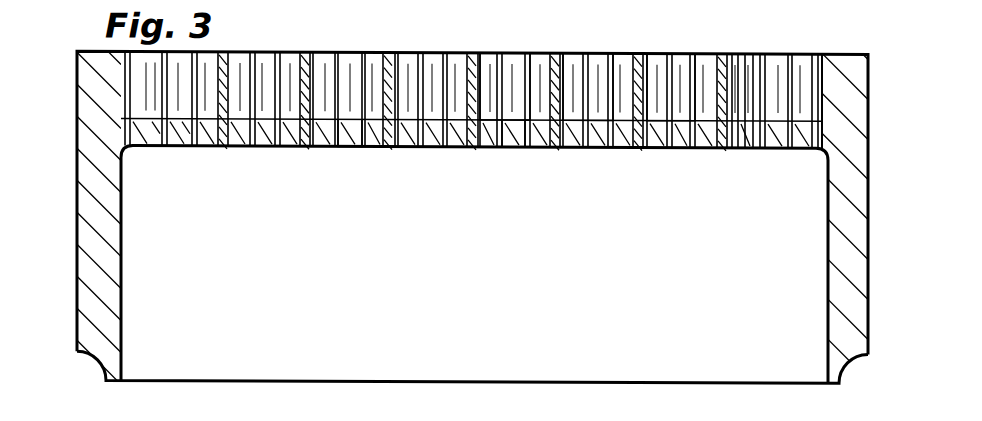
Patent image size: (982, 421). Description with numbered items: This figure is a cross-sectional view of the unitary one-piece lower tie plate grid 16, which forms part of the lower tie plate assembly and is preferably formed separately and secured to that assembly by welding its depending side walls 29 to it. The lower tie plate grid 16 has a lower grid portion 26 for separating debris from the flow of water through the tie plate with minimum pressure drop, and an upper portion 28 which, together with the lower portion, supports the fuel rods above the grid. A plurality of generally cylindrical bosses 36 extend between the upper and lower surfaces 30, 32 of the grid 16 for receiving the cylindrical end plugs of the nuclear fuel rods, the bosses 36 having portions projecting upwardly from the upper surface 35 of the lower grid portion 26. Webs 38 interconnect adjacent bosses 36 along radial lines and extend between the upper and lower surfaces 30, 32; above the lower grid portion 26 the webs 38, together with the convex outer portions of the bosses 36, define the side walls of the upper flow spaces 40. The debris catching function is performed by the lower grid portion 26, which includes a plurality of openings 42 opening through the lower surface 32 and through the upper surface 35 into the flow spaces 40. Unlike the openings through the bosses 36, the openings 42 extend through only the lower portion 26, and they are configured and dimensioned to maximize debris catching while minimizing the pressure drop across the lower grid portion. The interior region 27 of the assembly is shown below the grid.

The lower tie plate grid 16 is at (83, 66).
The lower grid portion 26 is at (415, 148).
The inner chamber 27 is at (153, 196).
The upper portion 28 is at (303, 85).
The depending side walls 29 is at (105, 263).
The upper surface 30 is at (513, 52).
The lower surface 32 is at (265, 148).
The upper surface of the lower grid portion 35 is at (350, 148).
The cylindrical bosses 36 is at (373, 68).
The webs 38 is at (587, 61).
The upper flow spaces 40 is at (685, 85).
The openings 42 is at (513, 148).